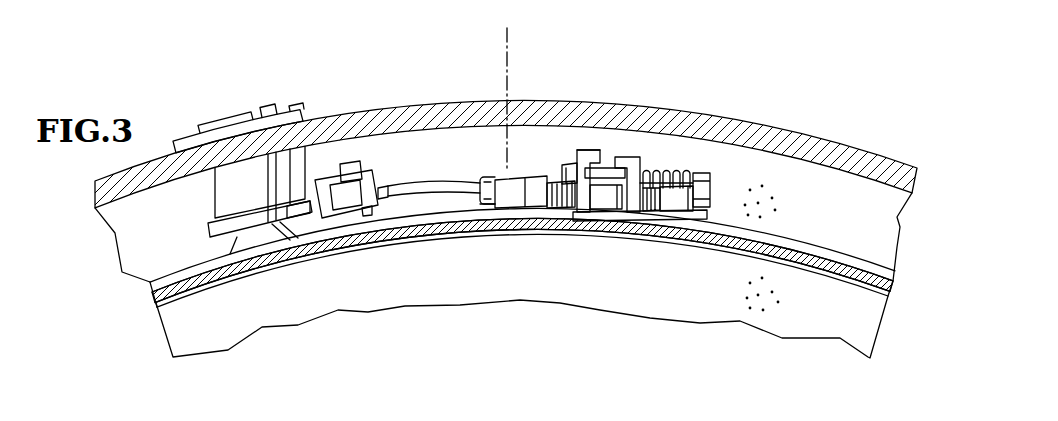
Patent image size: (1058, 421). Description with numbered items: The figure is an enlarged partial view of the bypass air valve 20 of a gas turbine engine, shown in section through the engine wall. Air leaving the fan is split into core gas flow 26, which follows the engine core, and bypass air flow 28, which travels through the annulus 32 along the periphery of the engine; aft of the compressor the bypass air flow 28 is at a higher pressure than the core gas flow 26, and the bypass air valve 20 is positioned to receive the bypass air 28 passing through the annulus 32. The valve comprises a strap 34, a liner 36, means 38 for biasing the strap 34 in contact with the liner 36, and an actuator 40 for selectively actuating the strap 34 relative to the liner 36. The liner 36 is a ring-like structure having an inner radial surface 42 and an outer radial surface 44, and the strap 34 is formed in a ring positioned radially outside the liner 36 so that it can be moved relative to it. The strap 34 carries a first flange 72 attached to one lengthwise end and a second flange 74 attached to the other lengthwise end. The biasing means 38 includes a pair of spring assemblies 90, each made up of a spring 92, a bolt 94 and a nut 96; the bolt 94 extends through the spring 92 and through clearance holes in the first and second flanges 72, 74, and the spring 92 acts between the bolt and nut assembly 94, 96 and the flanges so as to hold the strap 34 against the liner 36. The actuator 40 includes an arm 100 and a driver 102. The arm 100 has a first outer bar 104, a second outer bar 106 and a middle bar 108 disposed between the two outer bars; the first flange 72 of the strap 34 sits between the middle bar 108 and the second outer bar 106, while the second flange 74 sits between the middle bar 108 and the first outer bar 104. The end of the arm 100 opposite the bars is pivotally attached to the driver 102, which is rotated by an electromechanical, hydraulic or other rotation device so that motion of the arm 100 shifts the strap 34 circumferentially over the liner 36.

The bypass air valve 20 is at (357, 90).
The core gas flow 26 is at (770, 302).
The bypass air flow 28 is at (770, 208).
The annulus 32 is at (460, 157).
The strap 34 is at (868, 259).
The liner 36 is at (856, 290).
The means for biasing the strap in contact with the liner 38 is at (573, 146).
The actuator 40 is at (255, 203).
The inner radial surface 42 is at (872, 304).
The outer radial surface 44 is at (889, 272).
The first flange 72 is at (585, 150).
The second flange 74 is at (630, 156).
The spring assembly 90 is at (658, 163).
The spring 92 is at (656, 173).
The bolt 94 is at (704, 180).
The nut 96 is at (572, 168).
The arm 100 is at (435, 186).
The driver 102 is at (498, 212).
The first outer bar 104 is at (533, 203).
The second outer bar 106 is at (678, 210).
The middle bar 108 is at (603, 198).